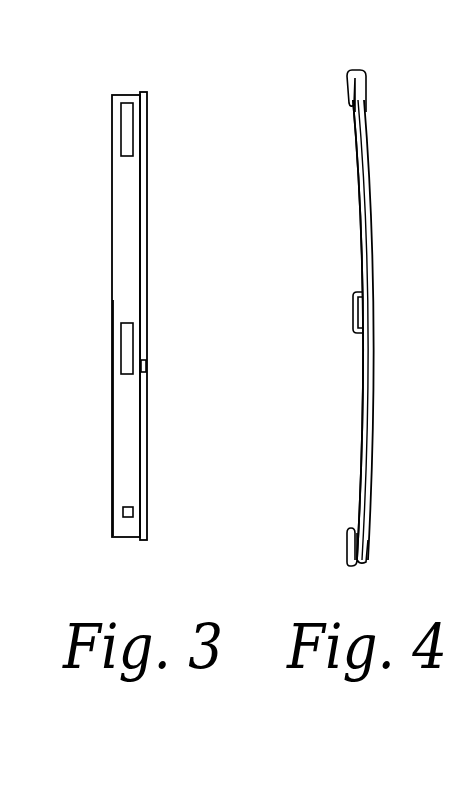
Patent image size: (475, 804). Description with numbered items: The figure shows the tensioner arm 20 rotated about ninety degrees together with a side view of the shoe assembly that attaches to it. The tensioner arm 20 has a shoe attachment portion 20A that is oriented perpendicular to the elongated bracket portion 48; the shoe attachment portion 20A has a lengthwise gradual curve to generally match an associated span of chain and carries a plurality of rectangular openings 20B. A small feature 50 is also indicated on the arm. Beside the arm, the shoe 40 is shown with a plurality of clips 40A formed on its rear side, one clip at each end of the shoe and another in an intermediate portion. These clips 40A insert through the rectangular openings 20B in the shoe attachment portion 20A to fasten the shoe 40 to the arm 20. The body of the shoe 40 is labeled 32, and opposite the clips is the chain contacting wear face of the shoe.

In FIG. 3, the tensioner arm 20 is at (104, 233).
In FIG. 3, the shoe attachment portion 20A is at (132, 422).
In FIG. 3, the rectangular openings 20B is at (127, 122).
In FIG. 3, the elongated bracket portion 48 is at (141, 215).
In FIG. 3, the stop tab 50 is at (145, 368).
In FIG. 4, the shoe 40 is at (377, 182).
In FIG. 4, the clips 40A is at (346, 93).
In FIG. 4, the clip body strip 32 is at (372, 223).